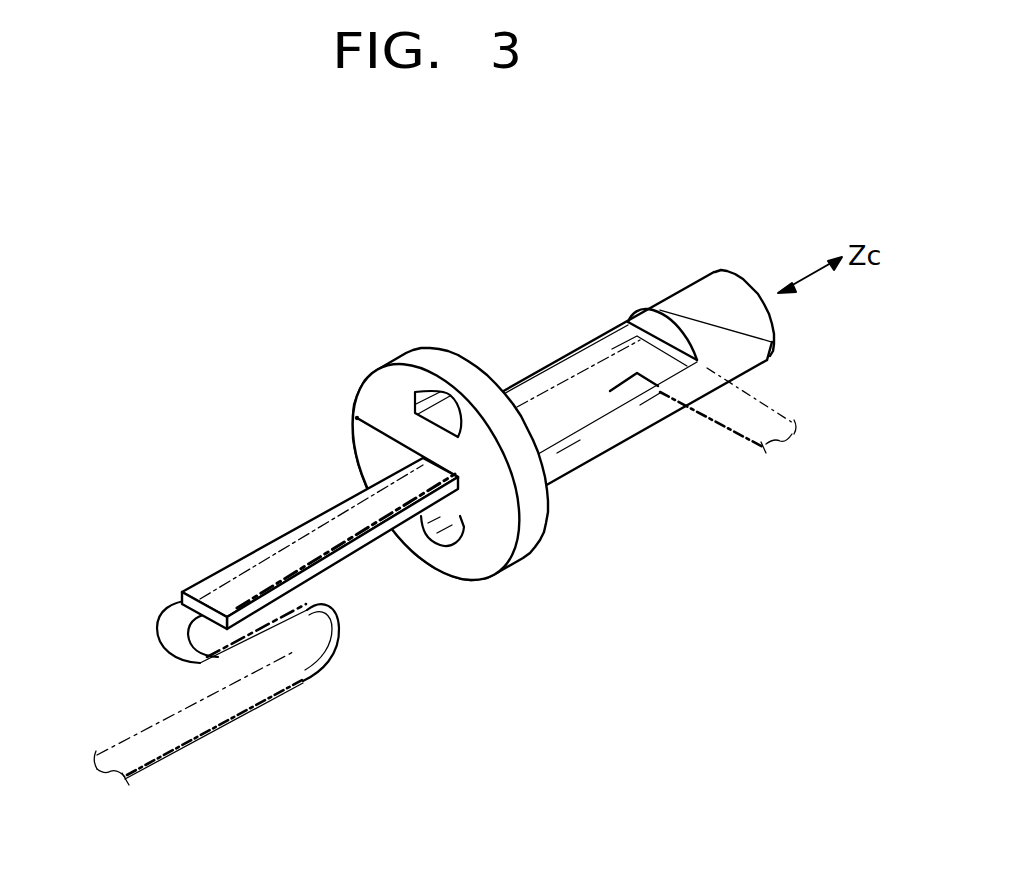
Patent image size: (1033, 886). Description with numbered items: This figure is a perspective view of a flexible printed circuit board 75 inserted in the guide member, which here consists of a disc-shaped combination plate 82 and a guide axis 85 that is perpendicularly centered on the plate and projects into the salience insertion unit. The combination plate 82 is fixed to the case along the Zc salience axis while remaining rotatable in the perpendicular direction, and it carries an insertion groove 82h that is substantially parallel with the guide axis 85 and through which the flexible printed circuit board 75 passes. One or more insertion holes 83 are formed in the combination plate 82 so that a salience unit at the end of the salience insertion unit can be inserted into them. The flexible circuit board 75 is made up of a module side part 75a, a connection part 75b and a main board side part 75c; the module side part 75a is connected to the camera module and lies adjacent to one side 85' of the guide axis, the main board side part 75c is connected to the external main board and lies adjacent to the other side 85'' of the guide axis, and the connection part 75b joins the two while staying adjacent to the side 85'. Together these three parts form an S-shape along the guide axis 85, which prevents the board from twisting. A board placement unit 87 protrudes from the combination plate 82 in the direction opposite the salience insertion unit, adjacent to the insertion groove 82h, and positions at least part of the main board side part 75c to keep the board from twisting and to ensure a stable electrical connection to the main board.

The flexible printed circuit board 75 is at (584, 392).
The module side part 75a is at (187, 738).
The connection part 75b is at (235, 638).
The main board side part 75c is at (313, 537).
The combination plate 82 is at (423, 360).
The insertion groove 82h is at (356, 419).
The insertion hole 83 is at (444, 545).
The guide axis 85 is at (304, 615).
The one side of the guide axis 85' is at (377, 598).
The other side of the guide axis 85'' is at (273, 618).
The board placement unit 87 is at (608, 402).